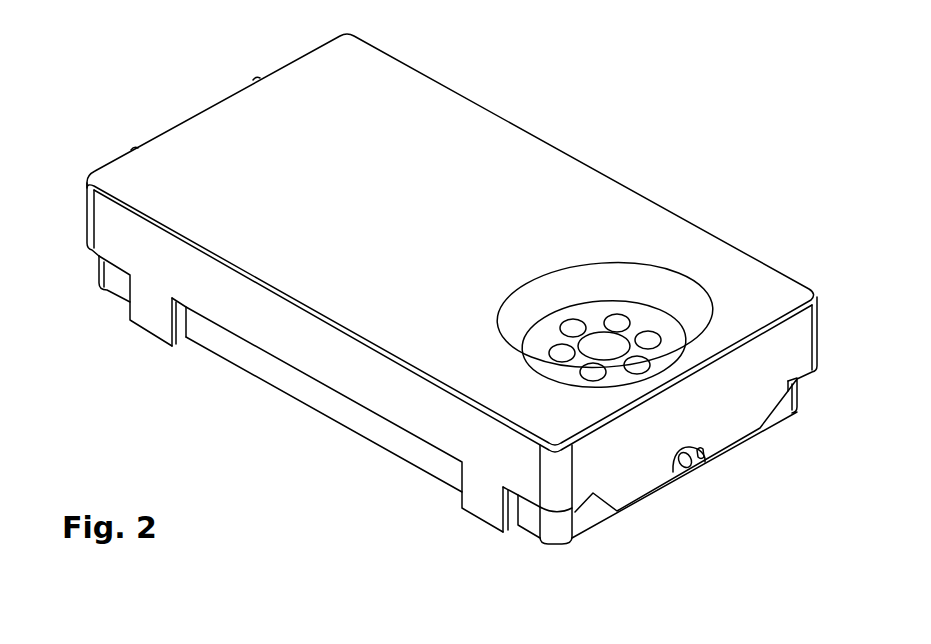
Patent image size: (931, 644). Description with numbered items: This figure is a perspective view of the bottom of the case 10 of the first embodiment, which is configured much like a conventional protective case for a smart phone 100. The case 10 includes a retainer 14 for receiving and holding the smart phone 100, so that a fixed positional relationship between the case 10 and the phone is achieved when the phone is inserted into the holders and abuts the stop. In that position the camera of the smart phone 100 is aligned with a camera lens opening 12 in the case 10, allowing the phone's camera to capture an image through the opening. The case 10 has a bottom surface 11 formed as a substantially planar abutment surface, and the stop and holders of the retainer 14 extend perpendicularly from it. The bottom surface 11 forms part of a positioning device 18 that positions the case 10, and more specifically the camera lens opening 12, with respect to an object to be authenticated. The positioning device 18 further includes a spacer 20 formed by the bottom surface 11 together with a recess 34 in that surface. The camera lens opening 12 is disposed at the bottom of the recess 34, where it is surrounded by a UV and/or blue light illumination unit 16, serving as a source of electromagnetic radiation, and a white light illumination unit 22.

The case 10 is at (182, 120).
The bottom surface 11 is at (543, 166).
The camera lens opening 12 is at (598, 347).
The retainer 14 is at (637, 482).
The UV and/or blue light illumination unit 16 is at (578, 326).
The positioning device 18 is at (650, 248).
The spacer 20 is at (595, 291).
The white light illumination unit 22 is at (644, 342).
The recess 34 is at (521, 315).
The smart phone 100 is at (227, 347).